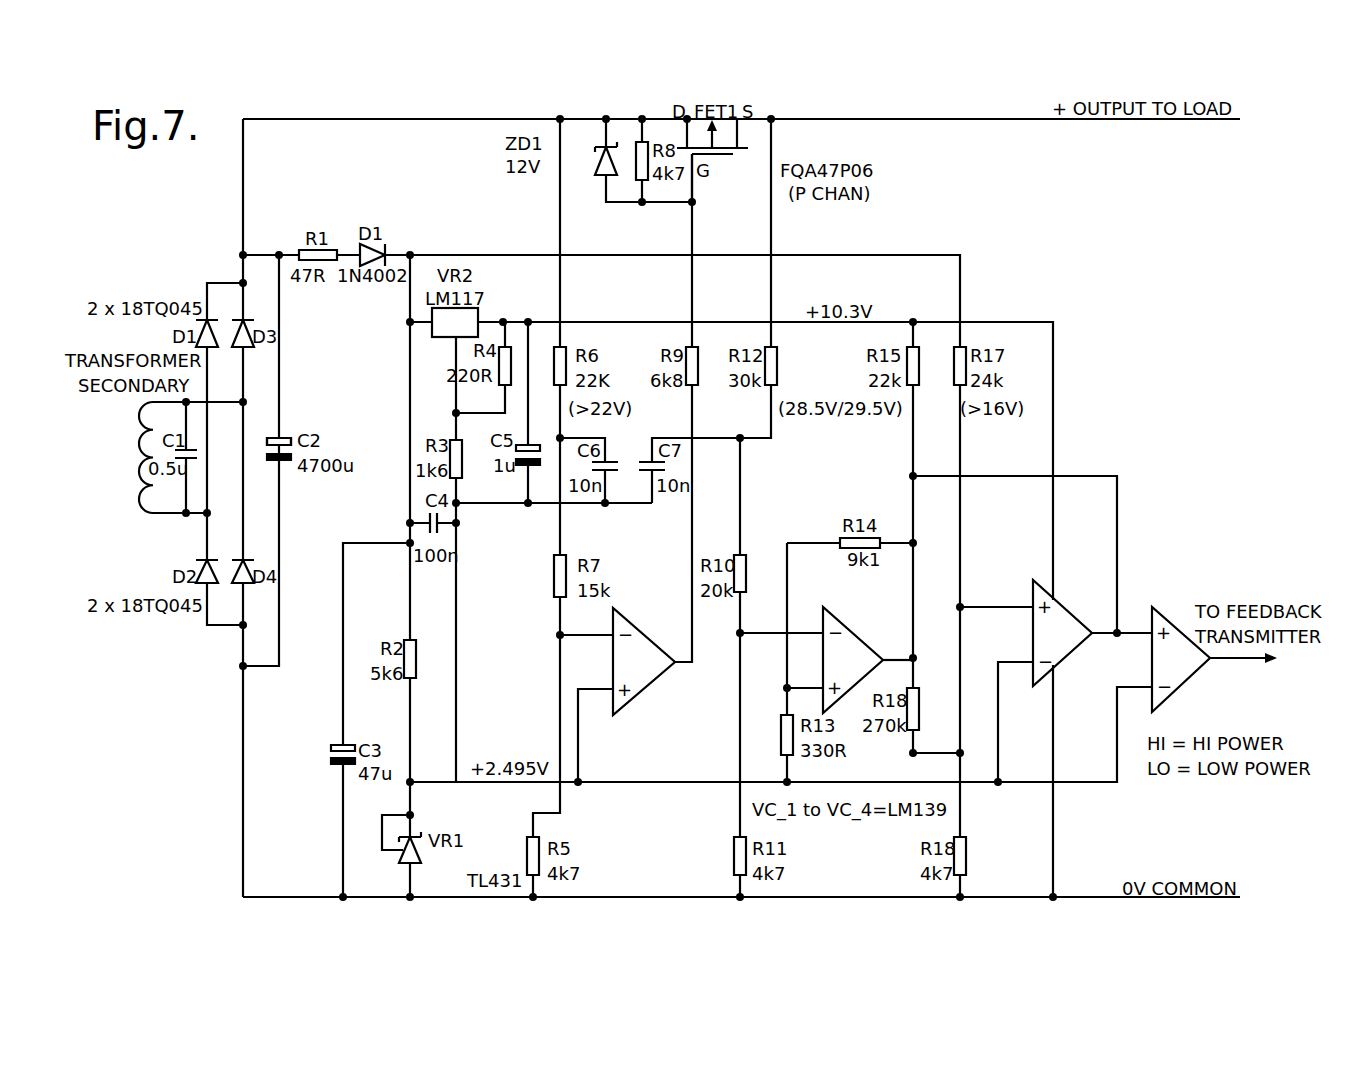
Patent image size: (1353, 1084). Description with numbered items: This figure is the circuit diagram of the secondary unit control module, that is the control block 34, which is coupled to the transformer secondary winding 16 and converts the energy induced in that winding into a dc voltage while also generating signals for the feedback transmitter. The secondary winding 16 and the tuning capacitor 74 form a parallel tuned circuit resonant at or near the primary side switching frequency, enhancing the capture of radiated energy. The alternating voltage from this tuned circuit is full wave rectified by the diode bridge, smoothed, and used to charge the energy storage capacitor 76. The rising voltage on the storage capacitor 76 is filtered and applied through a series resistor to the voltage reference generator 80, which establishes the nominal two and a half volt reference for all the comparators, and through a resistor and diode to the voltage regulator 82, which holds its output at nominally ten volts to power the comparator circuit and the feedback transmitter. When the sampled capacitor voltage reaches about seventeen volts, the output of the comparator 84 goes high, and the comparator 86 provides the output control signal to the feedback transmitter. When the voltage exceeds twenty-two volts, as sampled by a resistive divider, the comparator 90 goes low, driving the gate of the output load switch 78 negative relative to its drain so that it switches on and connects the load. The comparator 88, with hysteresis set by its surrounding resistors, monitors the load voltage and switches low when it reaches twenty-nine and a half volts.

The secondary winding 16 is at (130, 461).
The tuning capacitor 74 is at (187, 478).
The energy storage capacitor 76 is at (290, 430).
The output load switch 78 is at (742, 91).
The voltage reference generator 80 is at (404, 866).
The voltage regulator 82 is at (482, 311).
The comparator VC3 84 is at (1062, 615).
The comparator VC4 86 is at (1178, 610).
The comparator VC2 88 is at (852, 633).
The comparator VC1 90 is at (642, 640).
The control block 34 is at (680, 921).